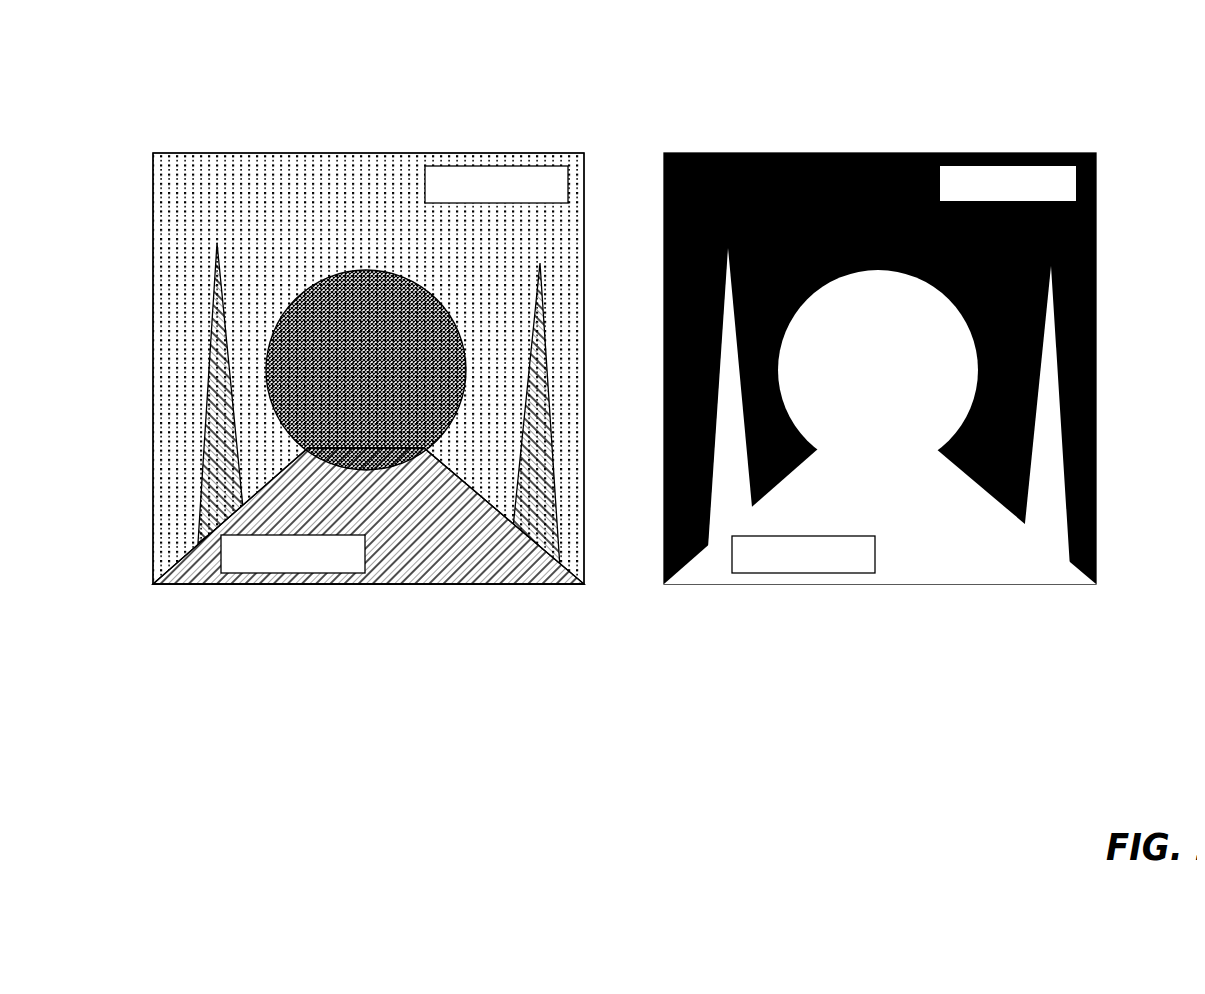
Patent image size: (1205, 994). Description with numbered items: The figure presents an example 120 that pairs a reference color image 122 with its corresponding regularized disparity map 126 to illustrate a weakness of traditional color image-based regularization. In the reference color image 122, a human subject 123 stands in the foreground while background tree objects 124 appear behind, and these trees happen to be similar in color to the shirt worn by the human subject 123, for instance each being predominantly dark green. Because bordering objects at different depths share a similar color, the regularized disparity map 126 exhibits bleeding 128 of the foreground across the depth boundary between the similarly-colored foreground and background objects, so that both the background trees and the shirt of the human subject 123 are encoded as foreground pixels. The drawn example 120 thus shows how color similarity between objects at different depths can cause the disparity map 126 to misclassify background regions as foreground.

The example 120 is at (52, 92).
The reference color image 122 is at (145, 172).
The human subject 123 is at (303, 262).
The background tree objects 124 is at (203, 240).
The regularized disparity map 126 is at (656, 172).
The bleeding 128 is at (722, 486).